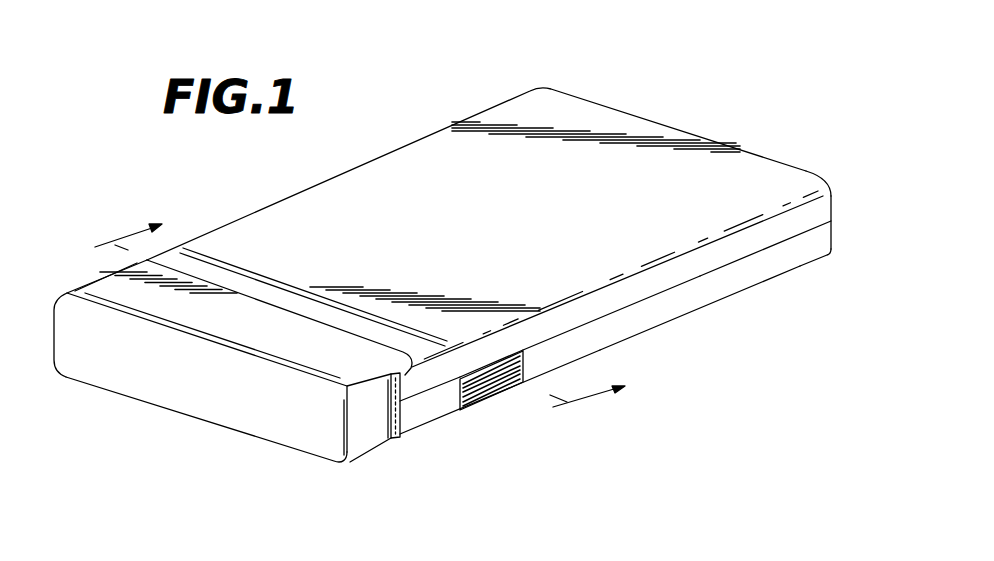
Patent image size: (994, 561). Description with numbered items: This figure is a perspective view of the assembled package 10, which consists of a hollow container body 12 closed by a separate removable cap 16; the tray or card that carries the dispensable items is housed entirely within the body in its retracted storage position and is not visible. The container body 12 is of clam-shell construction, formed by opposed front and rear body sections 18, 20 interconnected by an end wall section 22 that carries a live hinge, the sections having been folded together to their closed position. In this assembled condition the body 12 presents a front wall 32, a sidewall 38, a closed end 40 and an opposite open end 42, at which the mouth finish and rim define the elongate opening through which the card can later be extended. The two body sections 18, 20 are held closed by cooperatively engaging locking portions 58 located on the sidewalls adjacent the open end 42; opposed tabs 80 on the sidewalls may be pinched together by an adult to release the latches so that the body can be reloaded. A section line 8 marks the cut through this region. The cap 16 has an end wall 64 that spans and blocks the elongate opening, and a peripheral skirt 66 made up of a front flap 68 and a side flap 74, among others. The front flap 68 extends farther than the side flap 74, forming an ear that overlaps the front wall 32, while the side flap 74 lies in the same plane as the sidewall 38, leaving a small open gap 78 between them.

The section line 8- 8 is at (350, 328).
The package 10 is at (647, 123).
The container body 12 is at (742, 291).
The cap 16 is at (238, 428).
The front body section 18 is at (833, 186).
The rear body section 20 is at (830, 255).
The end wall section 22 is at (832, 219).
The front wall 32 is at (438, 157).
The sidewall 38 is at (781, 268).
The closed end 40 is at (590, 107).
The open end 42 is at (443, 430).
The locking portions 58 is at (492, 397).
The end wall 64 is at (72, 357).
The peripheral skirt 66 is at (95, 295).
The front flap 68 is at (143, 288).
The side flap 74 is at (368, 430).
The gap 78 is at (398, 433).
The tabs 80 is at (515, 362).